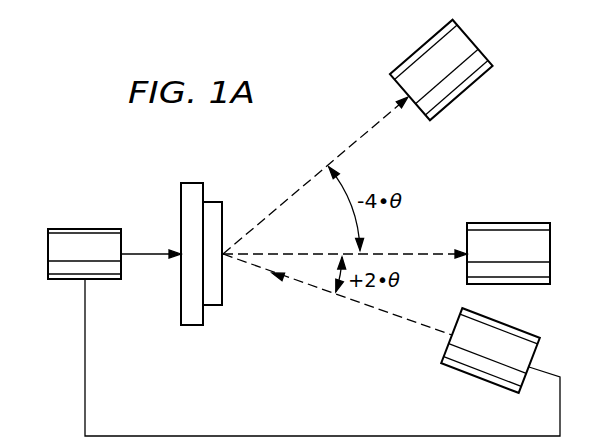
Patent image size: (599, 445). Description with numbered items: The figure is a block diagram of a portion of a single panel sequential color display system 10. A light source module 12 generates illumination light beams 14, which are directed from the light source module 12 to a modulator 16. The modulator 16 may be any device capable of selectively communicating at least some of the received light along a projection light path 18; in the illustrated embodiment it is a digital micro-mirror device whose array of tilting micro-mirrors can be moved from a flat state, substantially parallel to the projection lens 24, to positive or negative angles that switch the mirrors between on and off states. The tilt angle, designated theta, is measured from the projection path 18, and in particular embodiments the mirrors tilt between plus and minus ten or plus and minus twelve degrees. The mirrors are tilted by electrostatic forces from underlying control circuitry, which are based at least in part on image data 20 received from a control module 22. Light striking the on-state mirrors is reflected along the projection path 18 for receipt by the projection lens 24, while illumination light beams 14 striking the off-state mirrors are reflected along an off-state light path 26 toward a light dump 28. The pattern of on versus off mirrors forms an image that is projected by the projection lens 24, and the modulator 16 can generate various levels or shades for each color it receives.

The sequential color display system 10 is at (542, 122).
The light source module 12 is at (478, 380).
The illumination light beams 14 is at (392, 315).
The modulator 16 is at (191, 183).
The projection light path 18 is at (413, 252).
The image data 20 is at (150, 252).
The control module 22 is at (75, 228).
The projection lens 24 is at (508, 223).
The off-state light path 26 is at (358, 142).
The light dump 28 is at (474, 43).